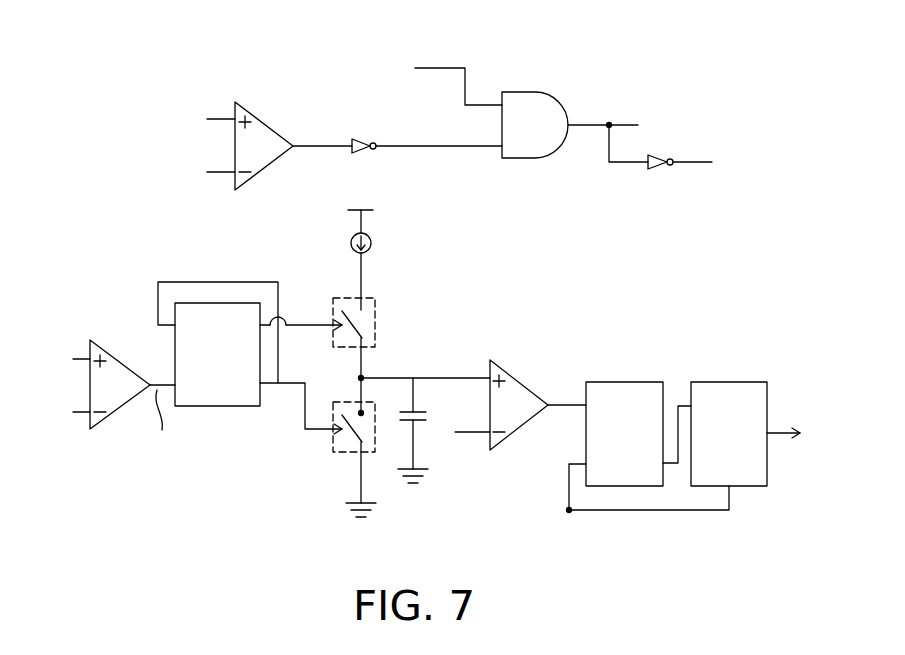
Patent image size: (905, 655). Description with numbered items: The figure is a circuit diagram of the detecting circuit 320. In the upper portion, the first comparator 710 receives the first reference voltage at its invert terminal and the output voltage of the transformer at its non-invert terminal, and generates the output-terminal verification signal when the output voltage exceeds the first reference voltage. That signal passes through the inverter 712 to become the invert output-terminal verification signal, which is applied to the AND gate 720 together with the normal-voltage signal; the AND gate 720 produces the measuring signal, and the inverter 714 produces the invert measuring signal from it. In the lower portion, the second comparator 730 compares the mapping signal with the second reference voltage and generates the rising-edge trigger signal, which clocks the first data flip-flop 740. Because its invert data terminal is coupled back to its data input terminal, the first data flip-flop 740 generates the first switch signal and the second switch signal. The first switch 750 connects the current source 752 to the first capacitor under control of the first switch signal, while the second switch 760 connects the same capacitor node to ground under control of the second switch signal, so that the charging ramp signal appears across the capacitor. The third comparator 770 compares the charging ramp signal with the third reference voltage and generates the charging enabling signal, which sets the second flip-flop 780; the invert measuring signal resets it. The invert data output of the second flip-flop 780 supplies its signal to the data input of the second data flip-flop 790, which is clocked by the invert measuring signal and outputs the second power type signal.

The detecting circuit 320 is at (424, 306).
The first comparator 710 is at (533, 90).
The inverter 712 is at (363, 133).
The inverter 714 is at (655, 170).
The AND gate 720 is at (270, 123).
The second comparator 730 is at (130, 360).
The first data flip-flop 740 is at (220, 407).
The first switch 750 is at (378, 307).
The current source 752 is at (372, 243).
The second switch 760 is at (332, 448).
The third comparator 770 is at (527, 380).
The second flip-flop 780 is at (625, 380).
The second data flip-flop 790 is at (732, 380).